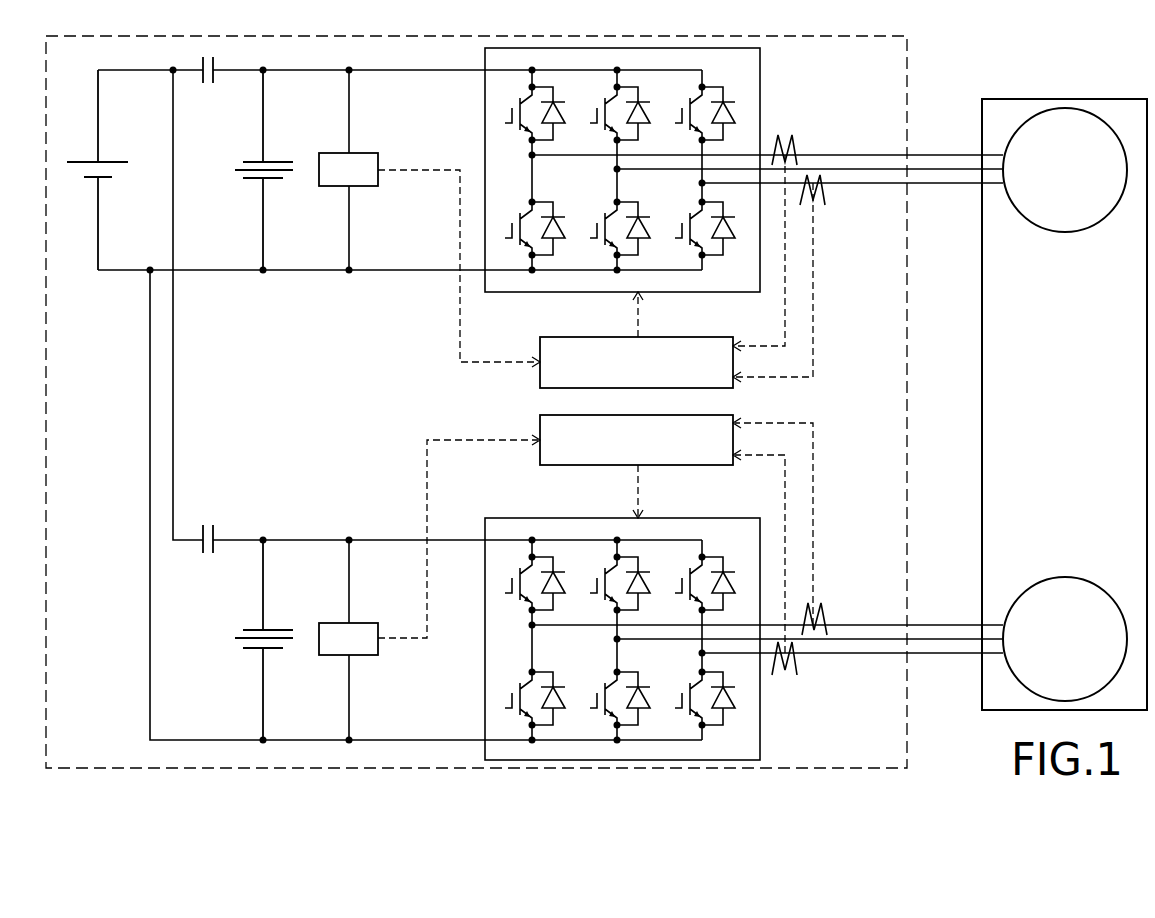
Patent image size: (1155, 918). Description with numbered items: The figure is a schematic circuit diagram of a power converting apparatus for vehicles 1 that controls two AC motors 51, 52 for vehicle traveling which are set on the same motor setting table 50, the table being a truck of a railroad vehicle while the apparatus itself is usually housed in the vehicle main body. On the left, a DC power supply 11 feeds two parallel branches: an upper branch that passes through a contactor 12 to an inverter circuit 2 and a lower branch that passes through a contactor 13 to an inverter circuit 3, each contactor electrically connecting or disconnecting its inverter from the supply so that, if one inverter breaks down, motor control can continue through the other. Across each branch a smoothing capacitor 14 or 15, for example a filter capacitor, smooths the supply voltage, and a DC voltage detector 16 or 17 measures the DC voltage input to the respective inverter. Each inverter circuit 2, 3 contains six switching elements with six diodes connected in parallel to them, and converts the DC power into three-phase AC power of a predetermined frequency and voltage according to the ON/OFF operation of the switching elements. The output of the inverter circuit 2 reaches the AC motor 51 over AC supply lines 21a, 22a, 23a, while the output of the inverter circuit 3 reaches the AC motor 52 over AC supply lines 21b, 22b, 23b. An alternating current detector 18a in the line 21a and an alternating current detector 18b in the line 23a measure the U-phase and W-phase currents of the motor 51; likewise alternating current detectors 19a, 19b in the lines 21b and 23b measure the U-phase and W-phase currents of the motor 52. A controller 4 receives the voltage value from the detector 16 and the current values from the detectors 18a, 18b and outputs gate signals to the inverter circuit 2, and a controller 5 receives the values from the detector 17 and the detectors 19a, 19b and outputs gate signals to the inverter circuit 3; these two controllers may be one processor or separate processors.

The power converting apparatus for vehicles 1 is at (610, 36).
The inverter circuit 2 is at (760, 66).
The inverter circuit 3 is at (760, 716).
The controller 4 is at (540, 340).
The controller 5 is at (540, 418).
The DC power supply 11 is at (109, 158).
The contactor 12 is at (213, 78).
The contactor 13 is at (213, 552).
The smoothing capacitor 14 is at (275, 160).
The smoothing capacitor 15 is at (275, 628).
The DC voltage detector 16 is at (365, 153).
The DC voltage detector 17 is at (365, 622).
The alternating current detector 18a is at (797, 147).
The alternating current detector 18b is at (825, 195).
The alternating current detector 19a is at (826, 617).
The alternating current detector 19b is at (797, 665).
The AC supply line 21a is at (938, 155).
The AC supply line 22a is at (929, 172).
The AC supply line 23a is at (960, 185).
The AC supply line 21b is at (938, 625).
The AC supply line 22b is at (929, 642).
The AC supply line 23b is at (960, 655).
The motor setting table 50 is at (1065, 99).
The AC motor 51 is at (1065, 232).
The AC motor 52 is at (1065, 577).